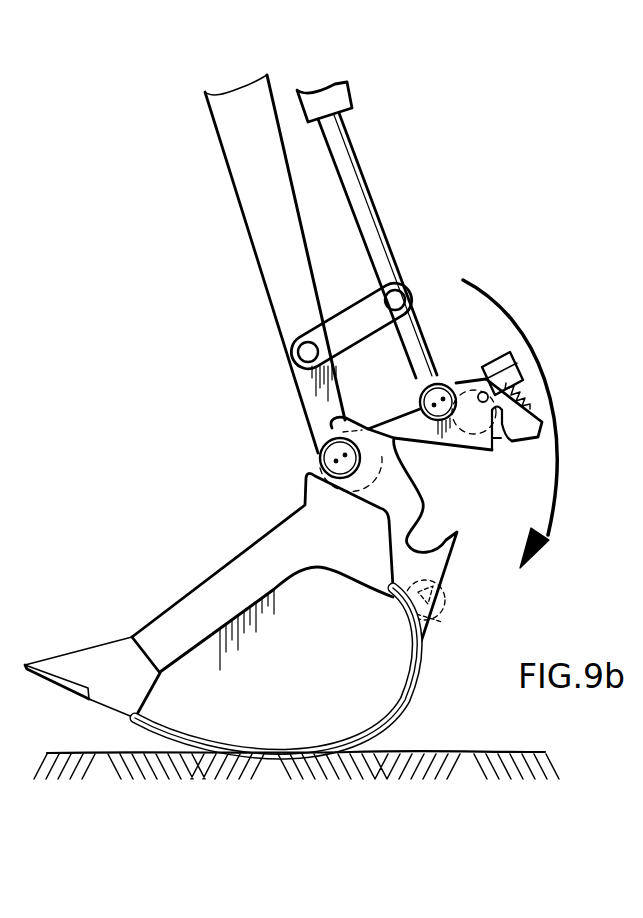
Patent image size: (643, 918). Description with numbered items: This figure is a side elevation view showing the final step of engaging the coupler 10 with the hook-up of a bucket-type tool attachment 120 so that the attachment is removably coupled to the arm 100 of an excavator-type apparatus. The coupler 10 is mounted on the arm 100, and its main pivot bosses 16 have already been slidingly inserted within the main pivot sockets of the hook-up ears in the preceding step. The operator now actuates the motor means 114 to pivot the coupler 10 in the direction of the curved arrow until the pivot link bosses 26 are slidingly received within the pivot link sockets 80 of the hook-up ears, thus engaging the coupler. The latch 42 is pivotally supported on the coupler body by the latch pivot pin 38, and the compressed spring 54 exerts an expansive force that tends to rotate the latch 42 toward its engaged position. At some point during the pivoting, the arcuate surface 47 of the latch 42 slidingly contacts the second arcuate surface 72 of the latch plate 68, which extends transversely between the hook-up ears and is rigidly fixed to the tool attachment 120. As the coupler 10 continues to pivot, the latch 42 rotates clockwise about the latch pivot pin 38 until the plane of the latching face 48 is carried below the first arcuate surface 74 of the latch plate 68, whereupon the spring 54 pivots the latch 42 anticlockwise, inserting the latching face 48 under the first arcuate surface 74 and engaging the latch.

The arm 100 is at (250, 210).
The motor means 114 is at (368, 227).
The coupler 10 is at (435, 448).
The pivot link bosses 26 is at (421, 403).
The main pivot bosses 16 is at (320, 458).
The latch pivot pin 38 is at (480, 392).
The latch 42 is at (520, 370).
The spring 54 is at (527, 395).
The arcuate surface 47 is at (496, 442).
The latching face 48 is at (504, 424).
The pivot link socket 80 is at (427, 532).
The second arcuate surface 72 is at (447, 567).
The latch plate 68 is at (447, 602).
The first arcuate surface 74 is at (440, 622).
The tool attachment 120 is at (400, 717).